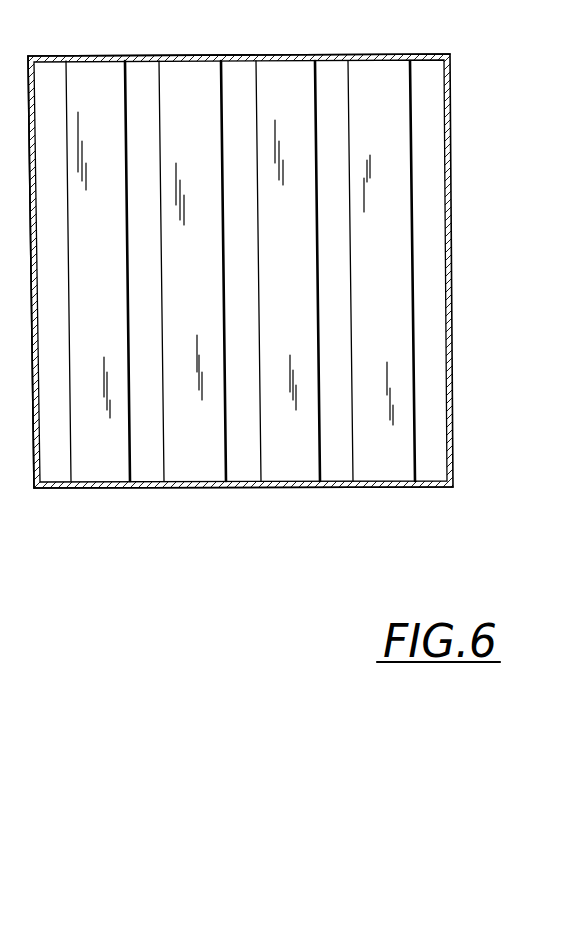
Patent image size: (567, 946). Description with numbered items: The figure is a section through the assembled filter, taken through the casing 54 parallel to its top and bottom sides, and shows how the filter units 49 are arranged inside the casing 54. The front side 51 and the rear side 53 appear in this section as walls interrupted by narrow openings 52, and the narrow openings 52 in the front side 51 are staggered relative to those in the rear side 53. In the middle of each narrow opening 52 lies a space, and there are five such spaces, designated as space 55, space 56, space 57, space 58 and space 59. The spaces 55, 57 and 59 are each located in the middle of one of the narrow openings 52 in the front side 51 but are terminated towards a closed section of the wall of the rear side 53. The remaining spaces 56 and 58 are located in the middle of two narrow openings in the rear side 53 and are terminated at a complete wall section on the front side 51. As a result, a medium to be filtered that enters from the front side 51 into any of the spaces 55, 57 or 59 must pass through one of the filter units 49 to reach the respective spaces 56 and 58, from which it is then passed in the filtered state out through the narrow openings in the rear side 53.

The filter unit 49 is at (373, 463).
The front side 51 is at (383, 487).
The narrow opening 52 is at (131, 58).
The rear side 53 is at (190, 58).
The casing 54 is at (455, 60).
The space 55 is at (36, 80).
The space 56 is at (158, 83).
The space 57 is at (255, 82).
The space 58 is at (317, 82).
The space 59 is at (411, 78).